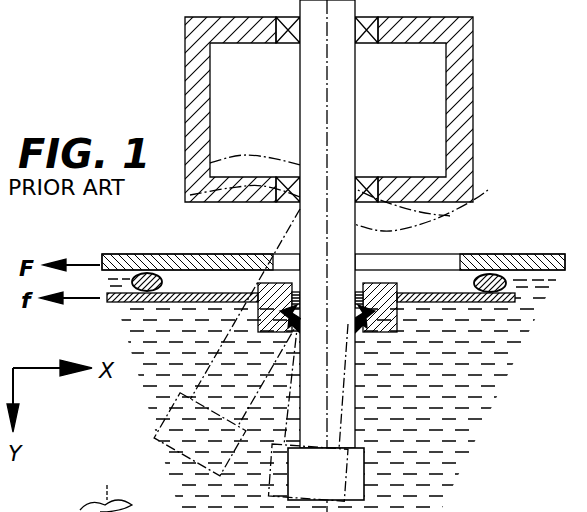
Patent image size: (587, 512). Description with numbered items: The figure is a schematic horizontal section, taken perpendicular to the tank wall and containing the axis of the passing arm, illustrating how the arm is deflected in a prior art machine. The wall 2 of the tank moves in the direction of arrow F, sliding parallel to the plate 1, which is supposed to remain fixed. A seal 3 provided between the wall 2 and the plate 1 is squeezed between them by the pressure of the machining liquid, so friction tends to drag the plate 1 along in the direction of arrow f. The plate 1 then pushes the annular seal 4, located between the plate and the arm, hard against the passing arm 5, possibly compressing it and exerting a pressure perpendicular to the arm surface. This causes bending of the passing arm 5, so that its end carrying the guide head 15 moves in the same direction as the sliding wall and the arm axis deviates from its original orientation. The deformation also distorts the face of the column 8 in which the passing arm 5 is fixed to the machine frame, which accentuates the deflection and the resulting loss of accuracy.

The plate 1 is at (442, 293).
The wall 2 is at (537, 254).
The seal 3 is at (150, 274).
The annular seal 4 is at (288, 334).
The passing arm 5 is at (335, 402).
The column 8 is at (193, 84).
The guide head 15 is at (355, 477).